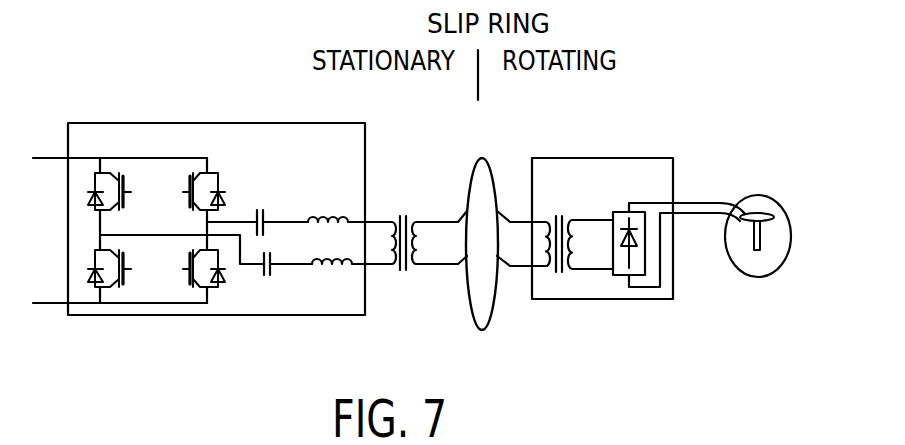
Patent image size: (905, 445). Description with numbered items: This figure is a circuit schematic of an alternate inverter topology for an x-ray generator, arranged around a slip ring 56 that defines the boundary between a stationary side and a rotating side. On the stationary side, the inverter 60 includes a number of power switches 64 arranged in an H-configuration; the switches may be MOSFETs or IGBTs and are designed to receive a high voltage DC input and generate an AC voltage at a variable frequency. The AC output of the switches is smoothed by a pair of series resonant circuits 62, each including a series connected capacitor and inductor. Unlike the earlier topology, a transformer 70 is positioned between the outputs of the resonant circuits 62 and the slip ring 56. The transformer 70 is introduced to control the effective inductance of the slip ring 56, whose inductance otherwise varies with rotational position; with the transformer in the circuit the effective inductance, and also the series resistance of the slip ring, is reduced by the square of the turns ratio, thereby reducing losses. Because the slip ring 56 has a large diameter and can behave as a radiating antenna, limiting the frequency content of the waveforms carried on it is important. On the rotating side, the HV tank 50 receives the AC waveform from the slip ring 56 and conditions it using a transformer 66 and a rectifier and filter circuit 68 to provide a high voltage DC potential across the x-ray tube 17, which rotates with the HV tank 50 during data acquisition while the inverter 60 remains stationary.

The inverter 60 is at (249, 123).
The resonant circuit 62 is at (304, 161).
The power switches 64 is at (190, 177).
The transformer 70 is at (406, 205).
The slip ring 56 is at (484, 158).
The high voltage tank 50 is at (657, 158).
The transformer 66 is at (564, 282).
The rectifier and filter circuit 68 is at (617, 306).
The x-ray tube 17 is at (773, 269).